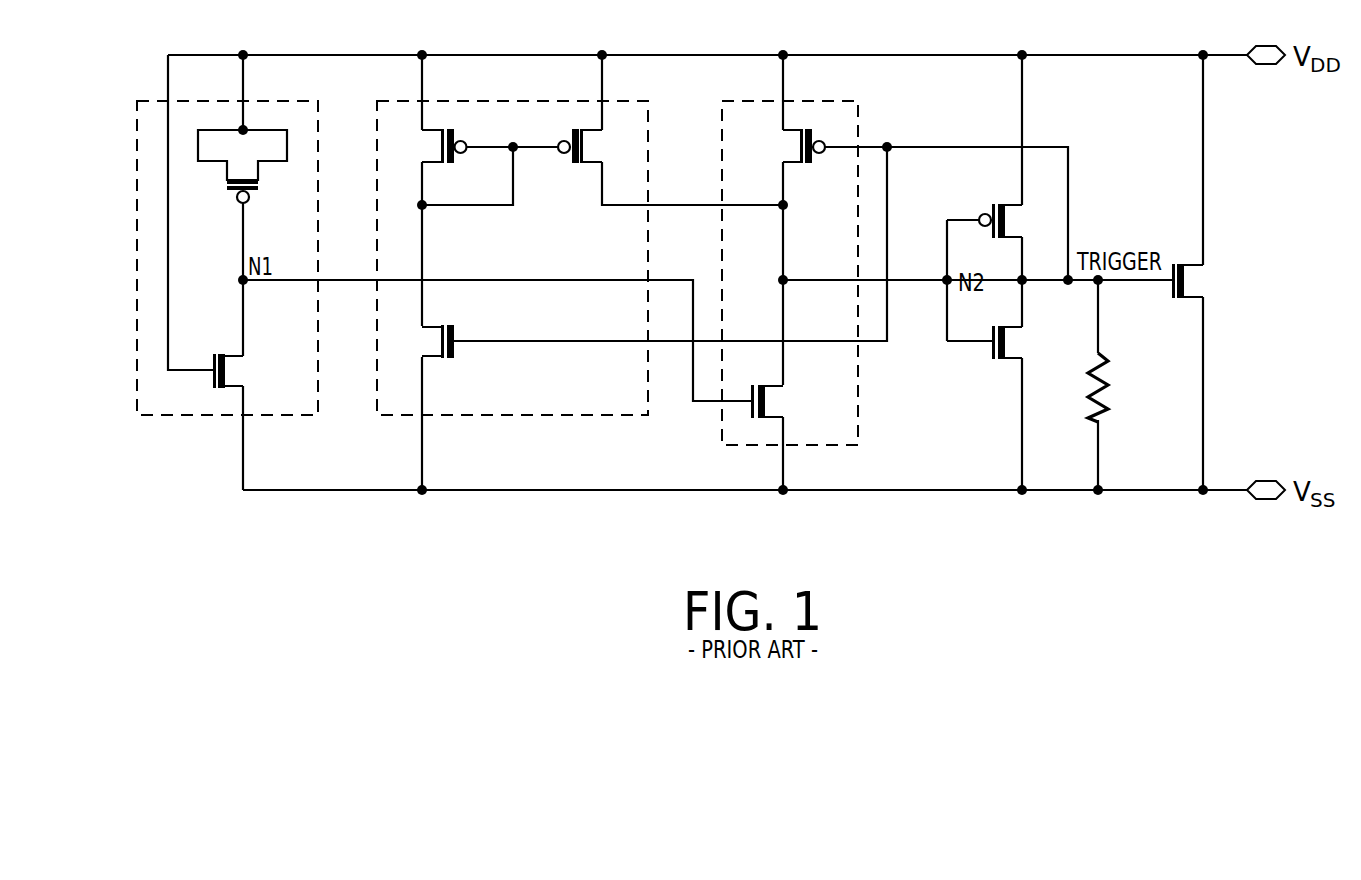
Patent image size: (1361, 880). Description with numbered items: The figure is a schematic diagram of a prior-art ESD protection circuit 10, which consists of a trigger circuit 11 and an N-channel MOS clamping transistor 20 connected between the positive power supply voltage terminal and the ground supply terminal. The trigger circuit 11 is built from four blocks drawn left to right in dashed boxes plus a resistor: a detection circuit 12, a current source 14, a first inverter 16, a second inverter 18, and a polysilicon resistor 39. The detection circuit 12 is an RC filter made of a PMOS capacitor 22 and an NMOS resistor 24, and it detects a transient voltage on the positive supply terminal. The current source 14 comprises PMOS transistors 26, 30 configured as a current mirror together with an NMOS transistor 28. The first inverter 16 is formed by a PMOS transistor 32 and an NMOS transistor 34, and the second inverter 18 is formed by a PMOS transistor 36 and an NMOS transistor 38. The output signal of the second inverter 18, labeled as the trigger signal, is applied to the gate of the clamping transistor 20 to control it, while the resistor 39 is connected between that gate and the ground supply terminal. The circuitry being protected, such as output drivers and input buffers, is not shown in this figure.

The ESD protection circuit 10 is at (589, 612).
The trigger circuit 11 is at (308, 528).
The detection circuit 12 is at (181, 416).
The current source 14 is at (511, 416).
The inverter 16 is at (722, 446).
The inverter 18 is at (1001, 318).
The NMOS clamping transistor 20 is at (1188, 281).
The PMOS capacitor 22 is at (253, 192).
The NMOS resistor 24 is at (229, 371).
The PMOS transistor 26 is at (438, 147).
The NMOS transistor 28 is at (438, 341).
The PMOS transistor 30 is at (590, 147).
The PMOS transistor 32 is at (797, 147).
The NMOS transistor 34 is at (768, 401).
The PMOS transistor 36 is at (1008, 221).
The NMOS transistor 38 is at (1008, 342).
The polysilicon resistor 39 is at (1110, 373).